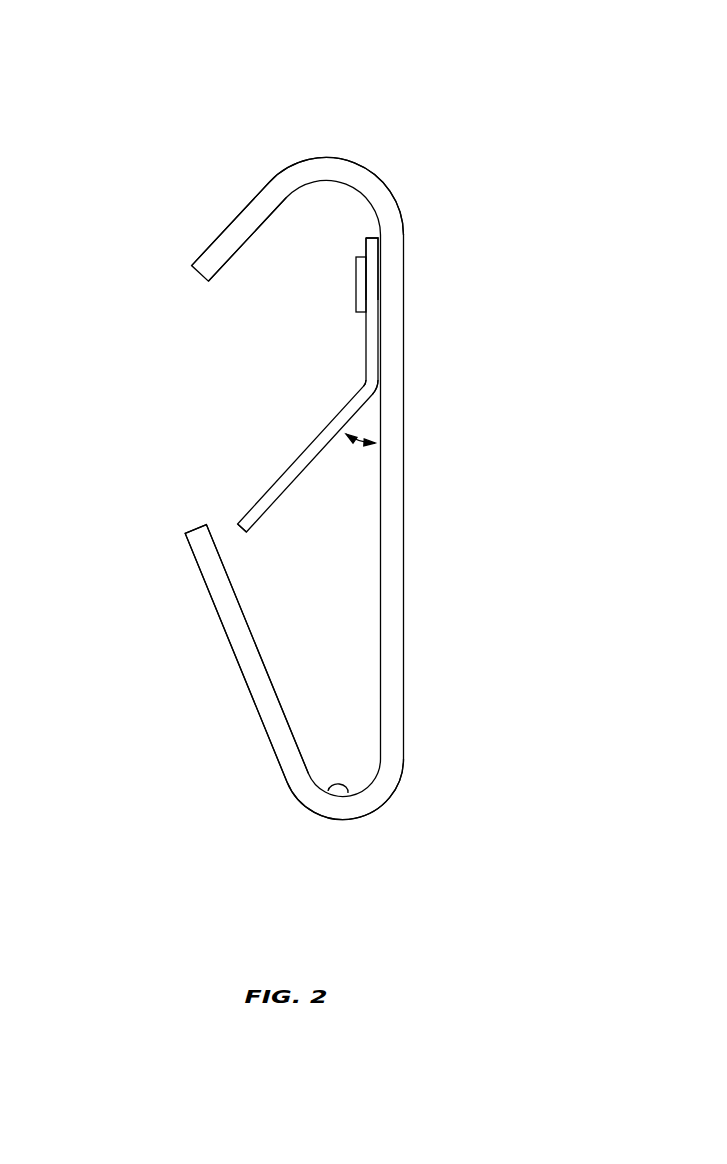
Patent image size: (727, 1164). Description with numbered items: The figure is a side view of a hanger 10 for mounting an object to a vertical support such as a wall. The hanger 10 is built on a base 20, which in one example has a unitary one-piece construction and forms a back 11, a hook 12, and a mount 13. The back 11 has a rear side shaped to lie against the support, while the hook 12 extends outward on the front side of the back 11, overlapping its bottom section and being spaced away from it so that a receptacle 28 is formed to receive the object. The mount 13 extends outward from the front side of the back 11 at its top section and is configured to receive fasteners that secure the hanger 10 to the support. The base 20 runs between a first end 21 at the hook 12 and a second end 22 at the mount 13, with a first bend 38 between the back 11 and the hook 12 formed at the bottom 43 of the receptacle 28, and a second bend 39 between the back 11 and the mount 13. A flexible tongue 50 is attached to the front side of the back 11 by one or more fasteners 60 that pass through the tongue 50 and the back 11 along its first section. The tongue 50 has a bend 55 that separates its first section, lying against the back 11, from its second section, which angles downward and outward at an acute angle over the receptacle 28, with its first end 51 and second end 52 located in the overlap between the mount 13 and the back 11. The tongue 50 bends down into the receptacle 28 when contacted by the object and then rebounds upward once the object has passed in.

The hanger 10 is at (257, 122).
The back 11 is at (492, 400).
The hook 12 is at (200, 682).
The mount 13 is at (168, 290).
The base 20 is at (395, 600).
The first end 21 is at (192, 532).
The second end 22 is at (200, 277).
The receptacle 28 is at (337, 665).
The first bend 38 is at (370, 818).
The second bend 39 is at (352, 158).
The bottom 43 is at (330, 787).
The tongue 50 is at (280, 473).
The first end 51 is at (372, 232).
The second end 52 is at (243, 525).
The bend 55 is at (367, 395).
The fasteners 60 is at (360, 283).